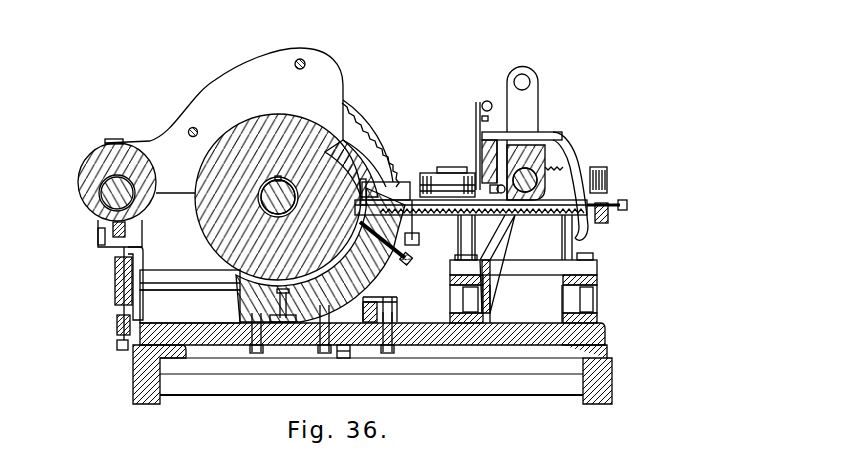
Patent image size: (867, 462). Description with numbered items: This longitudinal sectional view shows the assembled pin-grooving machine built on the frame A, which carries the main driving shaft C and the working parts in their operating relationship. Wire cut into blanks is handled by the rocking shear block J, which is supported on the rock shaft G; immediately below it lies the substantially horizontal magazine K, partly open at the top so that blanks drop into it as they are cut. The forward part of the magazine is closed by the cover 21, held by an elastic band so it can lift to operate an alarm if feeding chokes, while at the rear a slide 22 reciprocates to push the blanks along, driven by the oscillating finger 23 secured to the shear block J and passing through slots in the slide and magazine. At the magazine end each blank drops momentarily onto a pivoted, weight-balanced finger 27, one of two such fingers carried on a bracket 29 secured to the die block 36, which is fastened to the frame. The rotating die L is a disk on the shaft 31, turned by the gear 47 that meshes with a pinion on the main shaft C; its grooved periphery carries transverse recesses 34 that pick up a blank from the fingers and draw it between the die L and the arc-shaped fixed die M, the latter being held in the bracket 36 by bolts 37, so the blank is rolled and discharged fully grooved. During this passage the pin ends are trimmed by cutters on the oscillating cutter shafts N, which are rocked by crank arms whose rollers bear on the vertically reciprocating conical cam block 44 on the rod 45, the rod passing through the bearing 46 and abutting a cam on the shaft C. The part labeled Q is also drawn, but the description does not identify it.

The frame A is at (372, 379).
The main driving shaft C is at (96, 207).
The rock shaft G is at (542, 217).
The rocking shear block J is at (480, 138).
The magazine K is at (519, 217).
The rotating die L is at (243, 122).
The fixed die M is at (240, 296).
The cutter shafts N is at (195, 274).
The block Q is at (437, 170).
The cover 21 is at (448, 217).
The slide 22 is at (613, 225).
The oscillating finger 23 is at (565, 156).
The finger 27 is at (375, 178).
The bracket 29 is at (428, 175).
The shaft 31 is at (265, 203).
The transverse recesses 34 is at (318, 118).
The die block 36 is at (390, 292).
The bolts 37 is at (410, 262).
The conical cam block 44 is at (116, 328).
The rod 45 is at (122, 352).
The bearing 46 is at (115, 285).
The gear 47 is at (349, 104).